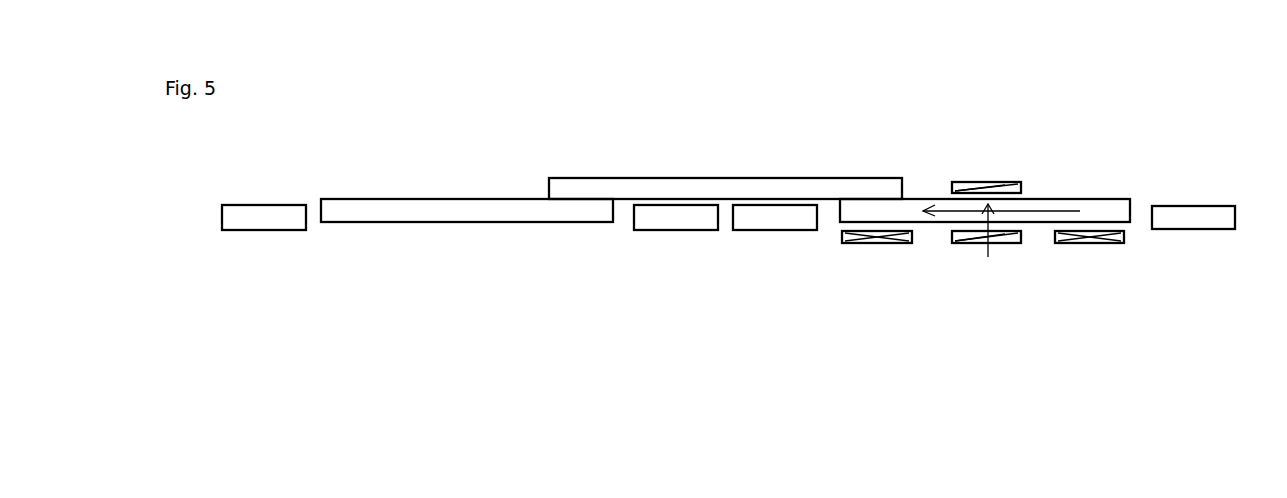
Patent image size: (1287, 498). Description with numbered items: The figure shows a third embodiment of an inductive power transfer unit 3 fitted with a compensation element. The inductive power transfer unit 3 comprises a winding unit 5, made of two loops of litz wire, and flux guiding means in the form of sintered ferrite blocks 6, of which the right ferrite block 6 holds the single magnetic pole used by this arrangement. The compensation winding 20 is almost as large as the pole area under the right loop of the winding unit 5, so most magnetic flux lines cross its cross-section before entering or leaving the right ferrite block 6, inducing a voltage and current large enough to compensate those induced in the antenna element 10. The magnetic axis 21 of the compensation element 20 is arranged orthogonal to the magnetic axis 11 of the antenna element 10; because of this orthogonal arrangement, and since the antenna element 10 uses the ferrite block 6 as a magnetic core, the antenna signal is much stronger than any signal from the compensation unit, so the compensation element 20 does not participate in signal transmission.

The inductive power transfer unit 3 is at (332, 154).
The winding unit 5 is at (268, 223).
The ferrite block 6 is at (870, 215).
The antenna element 10 is at (953, 237).
The magnetic axis 11 is at (935, 212).
The compensation winding 20 is at (878, 243).
The magnetic axis 21 is at (986, 228).